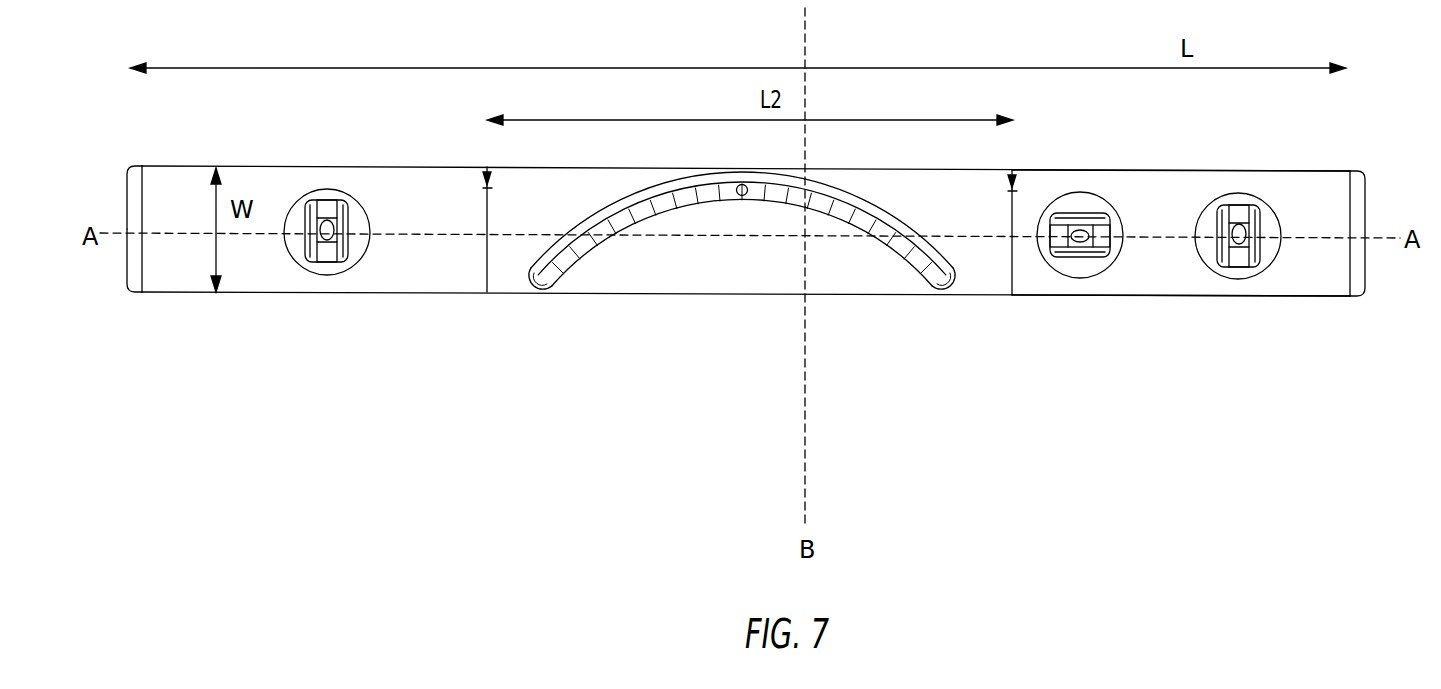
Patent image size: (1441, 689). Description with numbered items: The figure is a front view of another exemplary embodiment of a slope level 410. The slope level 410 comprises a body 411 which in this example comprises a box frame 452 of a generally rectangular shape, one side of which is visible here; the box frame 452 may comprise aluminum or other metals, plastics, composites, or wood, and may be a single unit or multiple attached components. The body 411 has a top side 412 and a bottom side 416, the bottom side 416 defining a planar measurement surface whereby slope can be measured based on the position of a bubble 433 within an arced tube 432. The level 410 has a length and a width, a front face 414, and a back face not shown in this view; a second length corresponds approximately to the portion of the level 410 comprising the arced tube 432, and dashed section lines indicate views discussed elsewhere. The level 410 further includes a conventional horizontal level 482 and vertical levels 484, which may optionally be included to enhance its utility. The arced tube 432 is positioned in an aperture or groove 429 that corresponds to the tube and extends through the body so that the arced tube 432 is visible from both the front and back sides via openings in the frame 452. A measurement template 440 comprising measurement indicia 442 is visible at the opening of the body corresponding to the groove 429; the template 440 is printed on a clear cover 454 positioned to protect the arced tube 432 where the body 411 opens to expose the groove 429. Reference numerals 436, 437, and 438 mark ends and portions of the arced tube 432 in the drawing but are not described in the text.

The slope level 410 is at (1191, 332).
The body 411 is at (1362, 178).
The top side 412 is at (1237, 172).
The front face 414 is at (177, 185).
The bottom side 416 is at (1305, 298).
The groove 429 is at (858, 200).
The arced tube 432 is at (585, 253).
The bubble 433 is at (720, 200).
The first end of arcuate vial 436 is at (527, 283).
The outer arcuate wall 437 is at (745, 172).
The second end of arcuate vial 438 is at (947, 287).
The measurement template 440 is at (525, 237).
The measurement indicia 442 is at (960, 258).
The box frame 452 is at (190, 275).
The clear cover 454 is at (655, 185).
The horizontal level 482 is at (1080, 232).
The vertical levels 484 is at (327, 205).